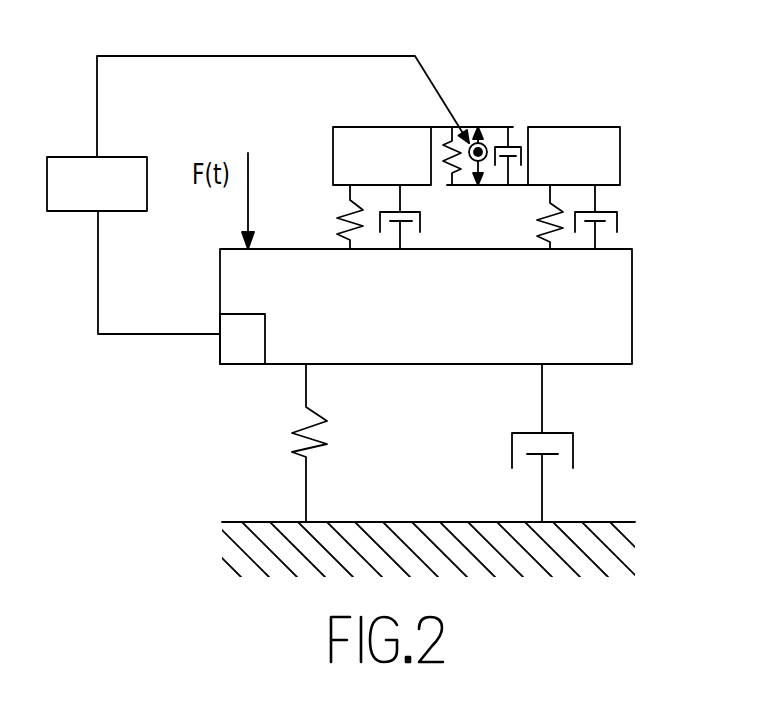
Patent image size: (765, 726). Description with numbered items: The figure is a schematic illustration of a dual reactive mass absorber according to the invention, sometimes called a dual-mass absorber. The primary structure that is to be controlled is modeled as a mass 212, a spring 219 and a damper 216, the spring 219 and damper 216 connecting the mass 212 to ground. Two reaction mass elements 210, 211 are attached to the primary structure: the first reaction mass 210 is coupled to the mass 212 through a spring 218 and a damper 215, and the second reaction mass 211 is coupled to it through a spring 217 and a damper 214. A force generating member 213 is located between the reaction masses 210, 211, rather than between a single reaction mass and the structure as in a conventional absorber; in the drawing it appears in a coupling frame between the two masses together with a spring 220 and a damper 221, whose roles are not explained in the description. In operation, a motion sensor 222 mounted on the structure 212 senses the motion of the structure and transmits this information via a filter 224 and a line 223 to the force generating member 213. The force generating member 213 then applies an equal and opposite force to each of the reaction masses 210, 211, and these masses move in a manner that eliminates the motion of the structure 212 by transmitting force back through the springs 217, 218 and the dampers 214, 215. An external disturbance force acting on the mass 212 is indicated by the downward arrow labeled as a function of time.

The reaction mass element 210 is at (333, 128).
The reaction mass element 211 is at (620, 145).
The mass 212 is at (618, 308).
The force generating member 213 is at (490, 127).
The damper 214 is at (617, 220).
The damper 215 is at (420, 218).
The damper 216 is at (573, 440).
The spring 217 is at (537, 229).
The spring 218 is at (338, 212).
The spring 219 is at (290, 440).
The coupling spring 220 is at (445, 146).
The coupling damper 221 is at (528, 152).
The motion sensor 222 is at (242, 339).
The line 223 is at (99, 283).
The filter 224 is at (73, 212).